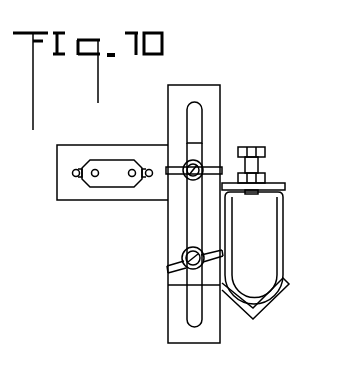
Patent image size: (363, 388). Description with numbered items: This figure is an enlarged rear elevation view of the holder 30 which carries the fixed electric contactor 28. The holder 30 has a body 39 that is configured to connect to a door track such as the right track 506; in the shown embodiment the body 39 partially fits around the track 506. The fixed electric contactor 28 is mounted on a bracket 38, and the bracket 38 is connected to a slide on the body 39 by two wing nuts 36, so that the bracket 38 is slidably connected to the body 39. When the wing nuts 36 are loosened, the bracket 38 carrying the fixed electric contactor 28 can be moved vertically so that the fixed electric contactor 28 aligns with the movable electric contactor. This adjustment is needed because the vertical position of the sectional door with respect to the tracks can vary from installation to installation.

The holder 30 is at (243, 102).
The fixed electric contactor 28 is at (113, 167).
The bracket 38 is at (110, 200).
The wing nuts 36 is at (189, 180).
The right track 506 is at (281, 262).
The body 39 is at (283, 308).